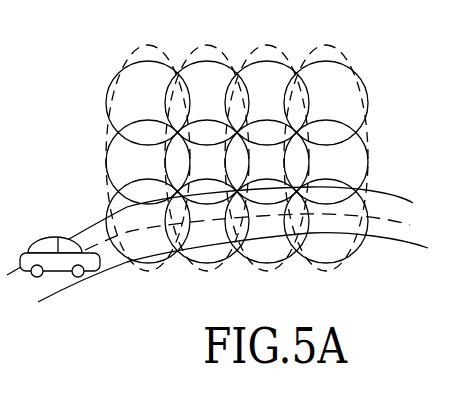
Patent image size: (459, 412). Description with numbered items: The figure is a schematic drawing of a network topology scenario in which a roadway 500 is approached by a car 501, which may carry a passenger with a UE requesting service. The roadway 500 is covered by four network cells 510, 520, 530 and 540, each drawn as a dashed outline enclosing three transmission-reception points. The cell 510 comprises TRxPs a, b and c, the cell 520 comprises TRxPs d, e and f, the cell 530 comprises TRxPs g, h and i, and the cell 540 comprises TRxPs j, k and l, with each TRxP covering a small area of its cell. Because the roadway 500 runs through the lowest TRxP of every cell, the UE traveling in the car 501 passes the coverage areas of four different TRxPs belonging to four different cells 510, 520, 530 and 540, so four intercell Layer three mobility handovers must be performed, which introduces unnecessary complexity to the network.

The roadway 500 is at (57, 292).
The approaching car 501 is at (53, 236).
The network cell 510 is at (149, 44).
The network cell 520 is at (208, 44).
The network cell 530 is at (268, 44).
The network cell 540 is at (327, 44).